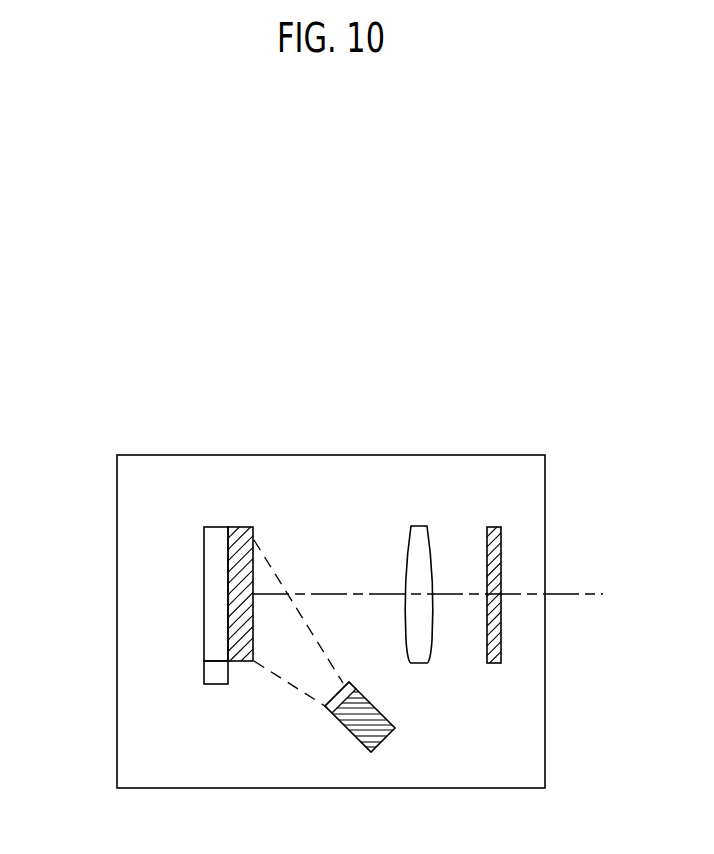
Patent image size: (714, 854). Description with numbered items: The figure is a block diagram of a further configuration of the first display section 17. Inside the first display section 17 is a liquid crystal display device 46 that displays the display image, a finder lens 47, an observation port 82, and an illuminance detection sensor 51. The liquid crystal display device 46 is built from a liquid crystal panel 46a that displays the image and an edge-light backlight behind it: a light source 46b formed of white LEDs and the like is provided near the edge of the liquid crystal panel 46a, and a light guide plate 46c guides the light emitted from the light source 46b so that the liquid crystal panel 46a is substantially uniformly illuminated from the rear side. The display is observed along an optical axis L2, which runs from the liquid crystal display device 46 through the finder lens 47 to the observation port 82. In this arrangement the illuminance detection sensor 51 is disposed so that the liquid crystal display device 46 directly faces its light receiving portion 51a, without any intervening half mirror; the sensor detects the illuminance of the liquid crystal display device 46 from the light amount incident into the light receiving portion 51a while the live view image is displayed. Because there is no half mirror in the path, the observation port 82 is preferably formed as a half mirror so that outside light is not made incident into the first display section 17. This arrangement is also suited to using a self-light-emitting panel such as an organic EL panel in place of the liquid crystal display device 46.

The first display section 17 is at (117, 481).
The liquid crystal display device 46 is at (249, 576).
The liquid crystal panel 46a is at (254, 538).
The light source 46b is at (210, 670).
The light guide plate 46c is at (213, 560).
The finder lens 47 is at (417, 528).
The observation port 82 is at (493, 528).
The illuminance detection sensor 51 is at (329, 728).
The light receiving portion 51a is at (329, 704).
The optical axis L2 is at (590, 594).